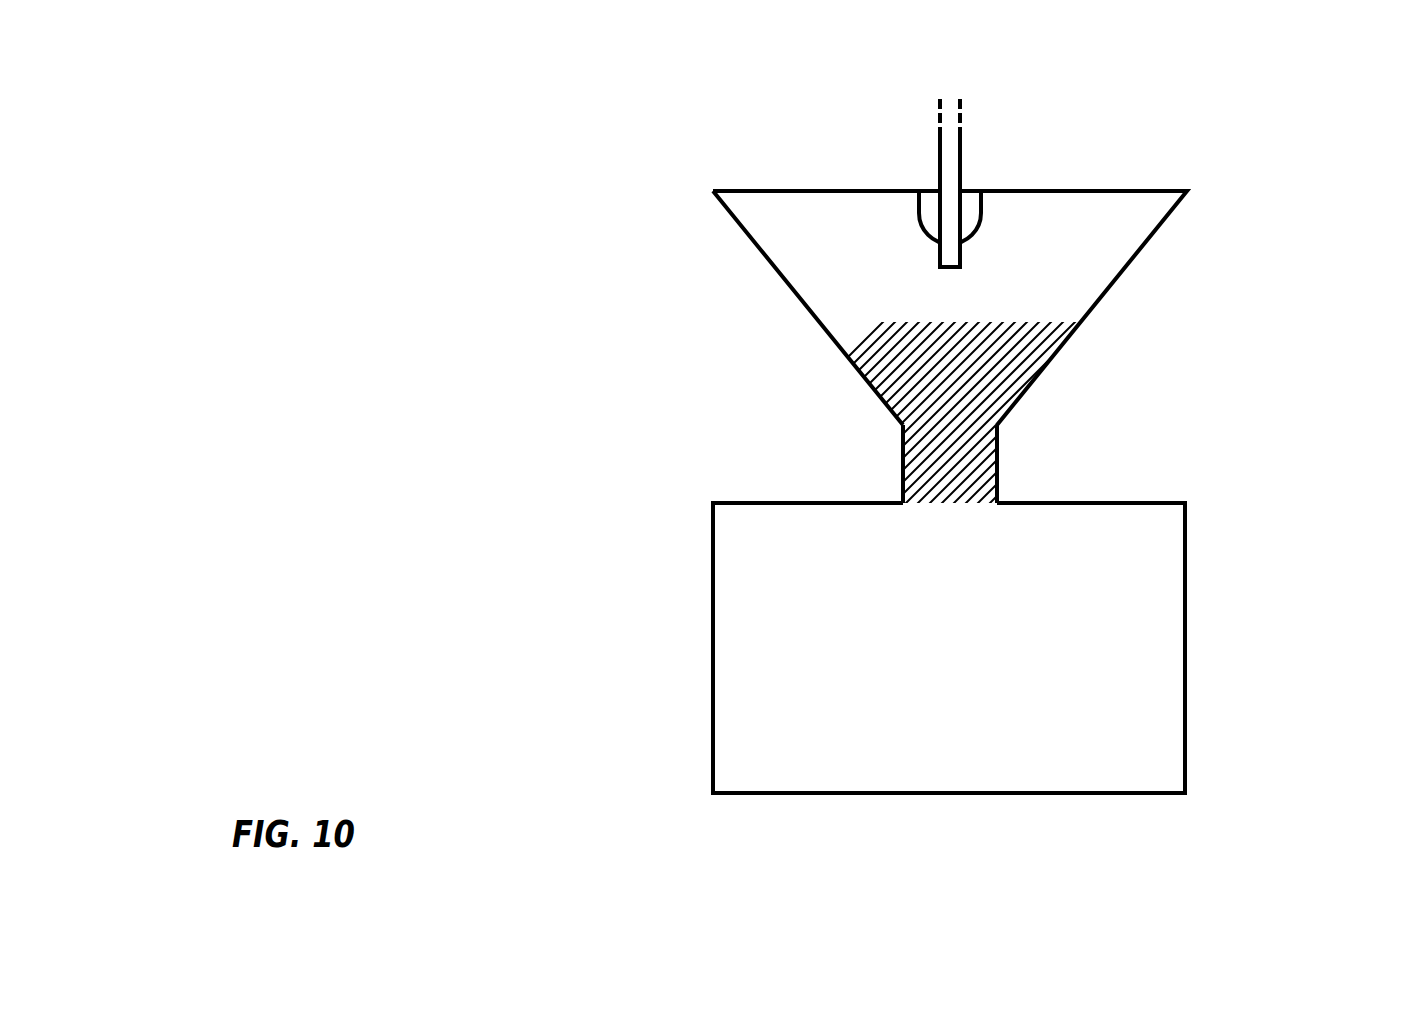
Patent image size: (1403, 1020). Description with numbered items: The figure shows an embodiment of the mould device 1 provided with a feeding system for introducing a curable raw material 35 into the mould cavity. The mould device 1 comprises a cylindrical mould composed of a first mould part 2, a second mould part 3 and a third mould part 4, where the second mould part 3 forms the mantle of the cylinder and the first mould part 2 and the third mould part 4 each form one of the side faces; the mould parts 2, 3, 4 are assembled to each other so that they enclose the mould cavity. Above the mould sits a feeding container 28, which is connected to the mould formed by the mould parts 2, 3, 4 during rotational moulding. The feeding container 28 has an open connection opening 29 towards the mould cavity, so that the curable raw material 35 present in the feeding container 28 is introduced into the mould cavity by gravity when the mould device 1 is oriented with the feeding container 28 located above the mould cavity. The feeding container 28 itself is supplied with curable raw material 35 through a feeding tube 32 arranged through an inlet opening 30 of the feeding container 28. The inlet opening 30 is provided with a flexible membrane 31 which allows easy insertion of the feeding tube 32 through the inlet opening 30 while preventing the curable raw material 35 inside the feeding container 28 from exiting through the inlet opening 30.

The mould device 1 is at (540, 205).
The first mould part 2 is at (758, 503).
The second mould part 3 is at (713, 645).
The third mould part 4 is at (1067, 793).
The feeding container 28 is at (1103, 293).
The connection opening 29 is at (966, 509).
The inlet opening 30 is at (975, 185).
The flexible membrane 31 is at (983, 213).
The feeding tube 32 is at (938, 147).
The curable raw material 35 is at (960, 480).